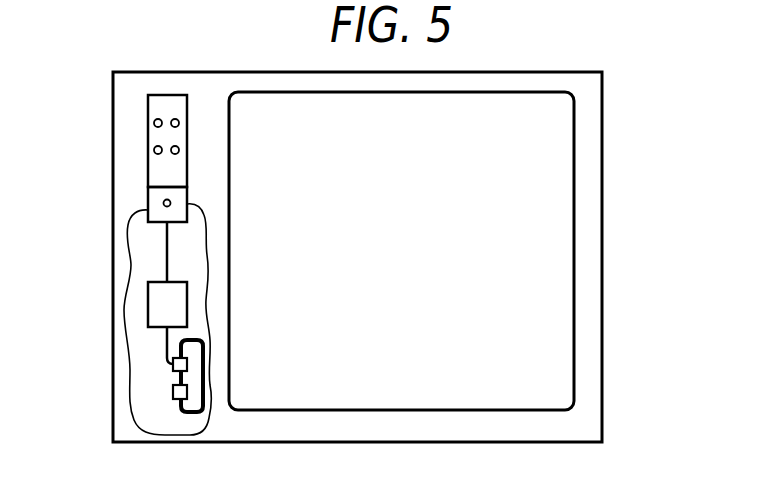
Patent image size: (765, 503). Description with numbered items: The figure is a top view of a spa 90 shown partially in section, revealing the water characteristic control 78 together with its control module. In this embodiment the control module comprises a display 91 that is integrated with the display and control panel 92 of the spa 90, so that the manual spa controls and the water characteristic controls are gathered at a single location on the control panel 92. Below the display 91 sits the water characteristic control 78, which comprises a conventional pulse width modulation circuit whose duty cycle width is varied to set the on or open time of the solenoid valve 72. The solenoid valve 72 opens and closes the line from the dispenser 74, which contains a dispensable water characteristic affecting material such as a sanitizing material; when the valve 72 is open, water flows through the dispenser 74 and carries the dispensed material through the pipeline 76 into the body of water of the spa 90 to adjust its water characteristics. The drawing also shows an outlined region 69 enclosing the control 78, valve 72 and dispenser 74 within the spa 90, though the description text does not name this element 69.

The spa 90 is at (602, 223).
The display and control panel 92 is at (171, 95).
The display 91 is at (155, 194).
The water characteristic control 78 is at (160, 300).
The pipeline 76 is at (195, 340).
The solenoid valve 72 is at (173, 366).
The dispenser 74 is at (173, 392).
The flexible circuit region 69 is at (203, 412).